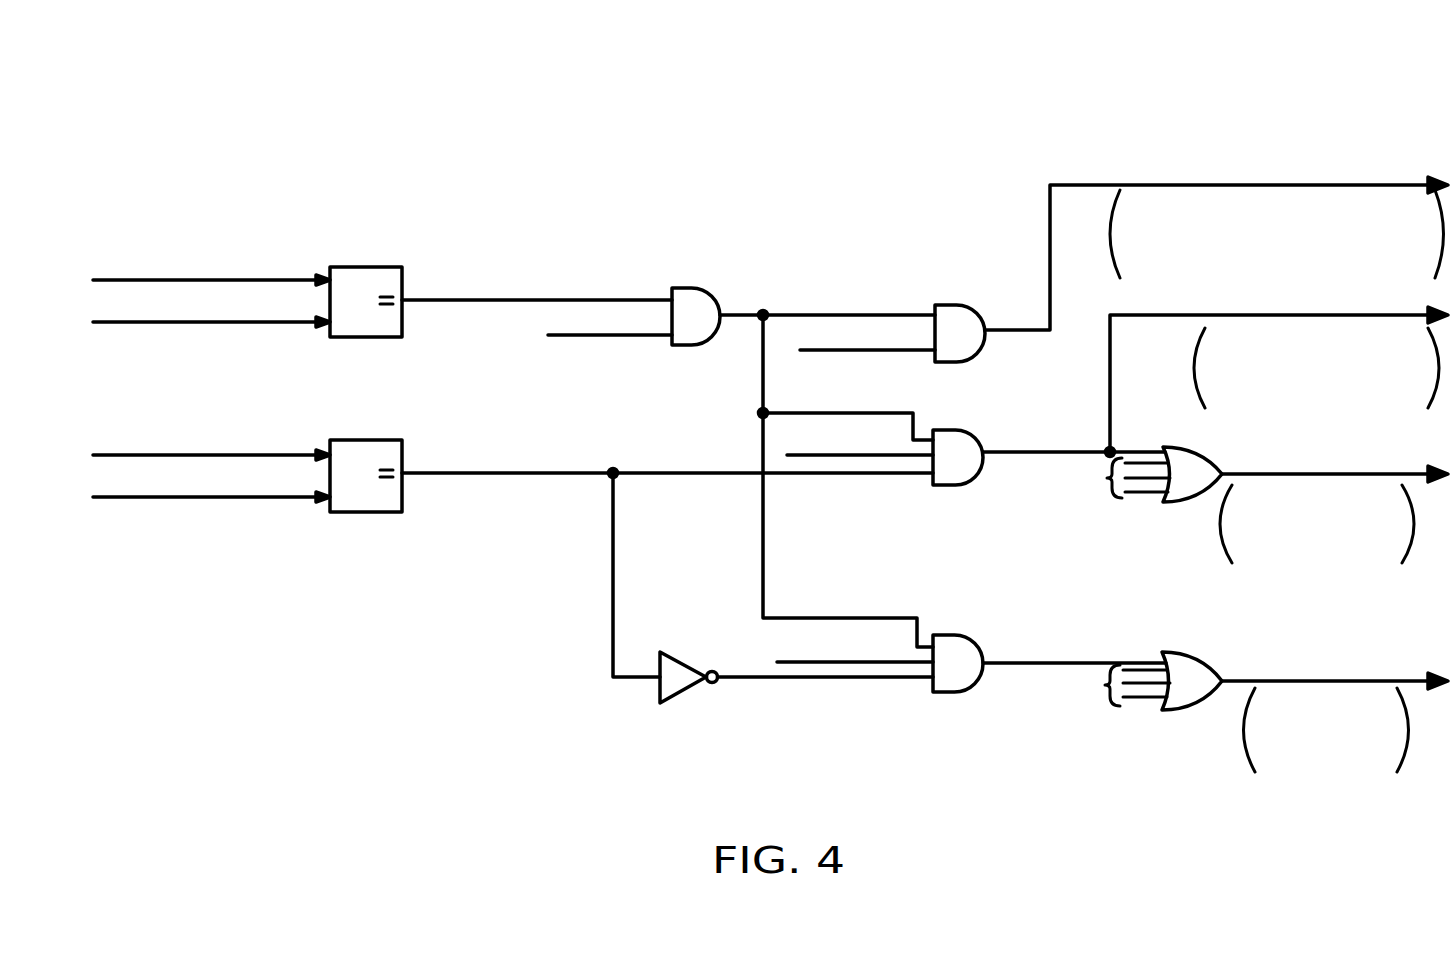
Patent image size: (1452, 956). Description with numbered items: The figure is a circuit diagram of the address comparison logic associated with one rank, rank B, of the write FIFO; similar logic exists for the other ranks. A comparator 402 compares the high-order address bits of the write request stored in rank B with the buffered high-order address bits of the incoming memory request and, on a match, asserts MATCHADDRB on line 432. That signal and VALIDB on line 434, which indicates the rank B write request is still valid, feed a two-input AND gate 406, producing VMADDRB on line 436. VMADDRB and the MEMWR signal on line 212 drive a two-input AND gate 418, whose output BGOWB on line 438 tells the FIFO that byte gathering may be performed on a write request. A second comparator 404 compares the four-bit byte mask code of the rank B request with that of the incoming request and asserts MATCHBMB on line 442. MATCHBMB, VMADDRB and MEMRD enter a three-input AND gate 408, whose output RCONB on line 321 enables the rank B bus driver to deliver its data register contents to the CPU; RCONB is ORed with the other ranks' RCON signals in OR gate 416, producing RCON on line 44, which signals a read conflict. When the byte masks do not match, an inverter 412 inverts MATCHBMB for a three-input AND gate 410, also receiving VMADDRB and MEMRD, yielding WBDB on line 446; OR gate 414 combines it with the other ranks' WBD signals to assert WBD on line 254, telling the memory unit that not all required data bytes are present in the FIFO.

The comparator 402 is at (374, 266).
The comparator 404 is at (353, 439).
The MATCHADDRB line 432 is at (663, 296).
The VALIDB line 434 is at (586, 338).
The two-input AND gate 406 is at (695, 346).
The VMADDRB line 436 is at (910, 311).
The MEMWR/MEMRD line 212 is at (885, 352).
The two-input AND gate 418 is at (970, 305).
The BGOWB line 438 is at (1323, 182).
The three-input AND gate 408 is at (965, 432).
The RCONB line 321 is at (1355, 300).
The OR gate 416 is at (1172, 504).
The RCON line 44 is at (1380, 470).
The MATCHBMB line 442 is at (667, 470).
The inverter 412 is at (683, 650).
The three-input AND gate 410 is at (965, 635).
The WBDB line 446 is at (1133, 660).
The OR gate 414 is at (1200, 658).
The WBD line 254 is at (1378, 680).